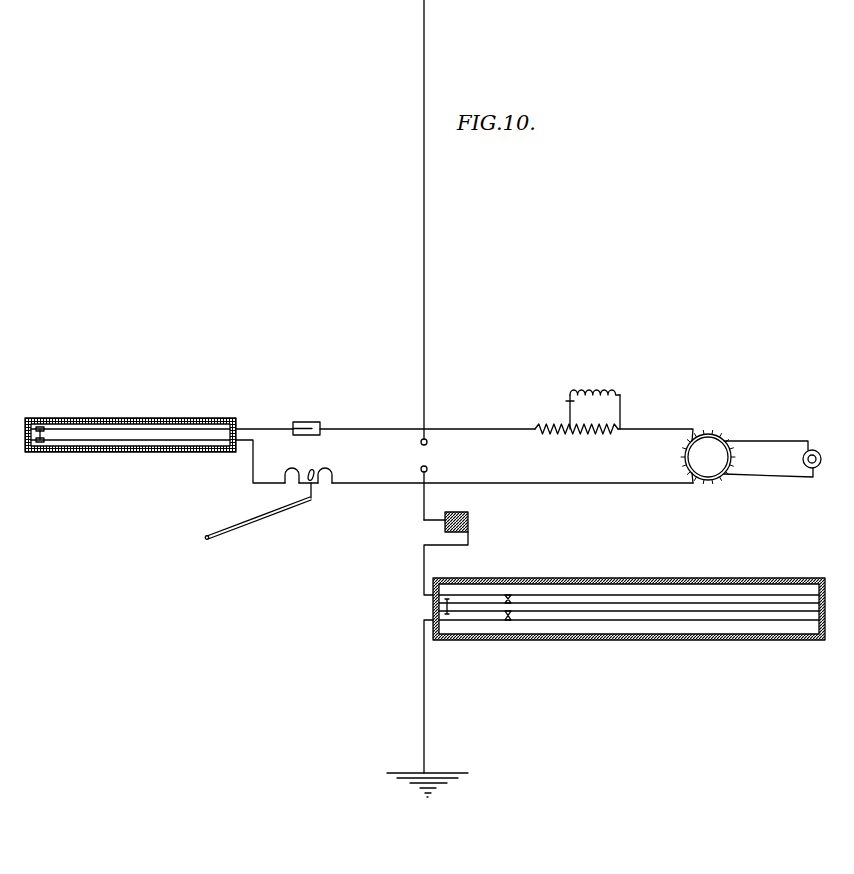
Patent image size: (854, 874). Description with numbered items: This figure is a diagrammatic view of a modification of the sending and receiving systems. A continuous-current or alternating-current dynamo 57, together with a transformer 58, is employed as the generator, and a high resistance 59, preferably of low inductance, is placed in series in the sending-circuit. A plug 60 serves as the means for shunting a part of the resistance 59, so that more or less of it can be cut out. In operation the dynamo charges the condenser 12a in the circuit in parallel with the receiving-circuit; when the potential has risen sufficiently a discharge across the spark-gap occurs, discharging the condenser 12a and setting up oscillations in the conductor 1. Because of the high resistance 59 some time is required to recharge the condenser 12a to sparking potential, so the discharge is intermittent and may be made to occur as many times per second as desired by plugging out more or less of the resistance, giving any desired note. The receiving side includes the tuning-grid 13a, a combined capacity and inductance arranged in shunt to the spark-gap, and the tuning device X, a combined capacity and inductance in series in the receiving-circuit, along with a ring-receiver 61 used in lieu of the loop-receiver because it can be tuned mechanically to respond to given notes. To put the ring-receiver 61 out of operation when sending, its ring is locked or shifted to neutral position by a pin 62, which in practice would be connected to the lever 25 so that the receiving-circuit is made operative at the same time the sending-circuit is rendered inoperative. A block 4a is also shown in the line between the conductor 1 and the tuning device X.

The conductor 1 is at (427, 319).
The tuning-grid 13a is at (130, 422).
The condenser 12a is at (311, 415).
The ring-receiver 61 is at (308, 463).
The pin 62 is at (314, 497).
The lever 25 is at (258, 518).
The resistance block 4a is at (470, 521).
The plug 60 is at (575, 409).
The high resistance 59 is at (576, 442).
The transformer 58 is at (714, 430).
The dynamo 57 is at (819, 448).
The tuning device X is at (629, 622).